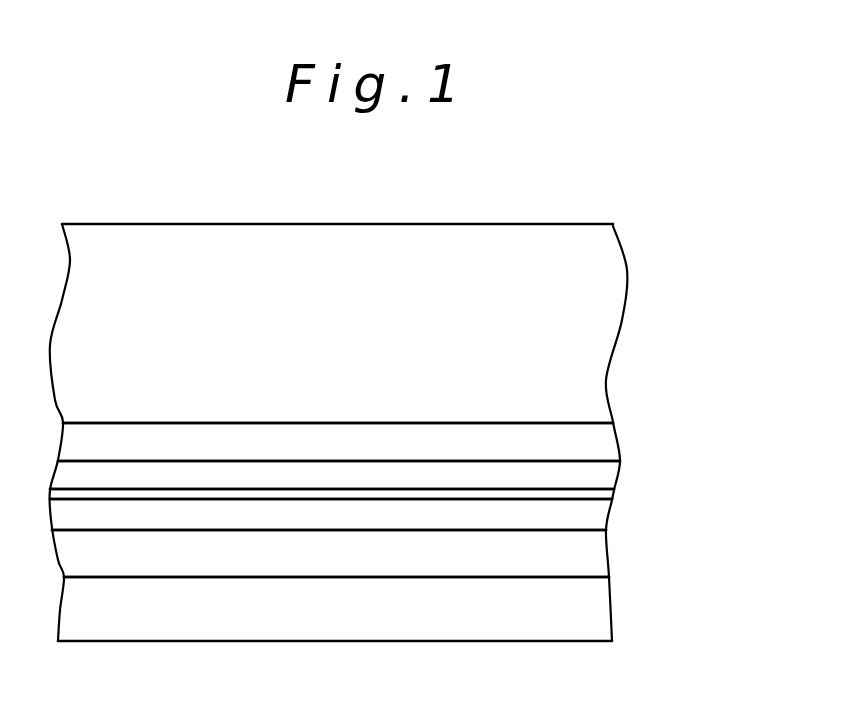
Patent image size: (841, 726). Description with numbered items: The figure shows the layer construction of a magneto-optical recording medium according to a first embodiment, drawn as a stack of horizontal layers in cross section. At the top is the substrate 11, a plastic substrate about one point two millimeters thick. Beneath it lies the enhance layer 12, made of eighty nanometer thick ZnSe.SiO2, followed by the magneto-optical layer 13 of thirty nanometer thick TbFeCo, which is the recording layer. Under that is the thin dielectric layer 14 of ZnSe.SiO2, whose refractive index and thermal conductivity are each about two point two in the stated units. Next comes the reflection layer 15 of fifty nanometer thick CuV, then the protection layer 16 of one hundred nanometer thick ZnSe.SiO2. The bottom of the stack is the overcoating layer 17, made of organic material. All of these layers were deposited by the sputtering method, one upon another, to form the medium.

The substrate 11 is at (607, 305).
The enhance layer 12 is at (607, 443).
The magneto-optical layer 13 is at (612, 478).
The dielectric layer 14 is at (610, 497).
The reflection layer 15 is at (598, 523).
The protection layer 16 is at (597, 562).
The overcoating layer 17 is at (602, 619).